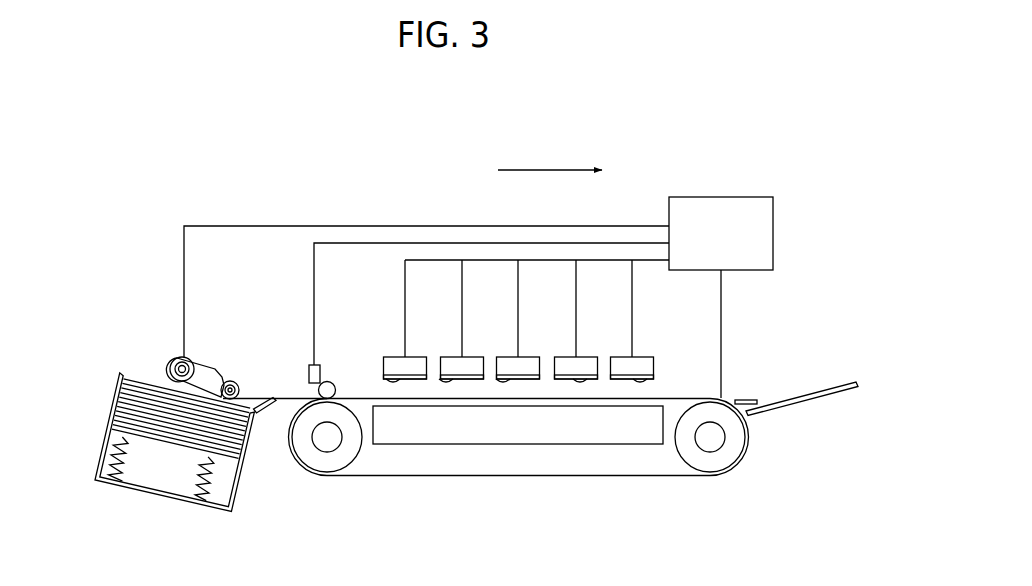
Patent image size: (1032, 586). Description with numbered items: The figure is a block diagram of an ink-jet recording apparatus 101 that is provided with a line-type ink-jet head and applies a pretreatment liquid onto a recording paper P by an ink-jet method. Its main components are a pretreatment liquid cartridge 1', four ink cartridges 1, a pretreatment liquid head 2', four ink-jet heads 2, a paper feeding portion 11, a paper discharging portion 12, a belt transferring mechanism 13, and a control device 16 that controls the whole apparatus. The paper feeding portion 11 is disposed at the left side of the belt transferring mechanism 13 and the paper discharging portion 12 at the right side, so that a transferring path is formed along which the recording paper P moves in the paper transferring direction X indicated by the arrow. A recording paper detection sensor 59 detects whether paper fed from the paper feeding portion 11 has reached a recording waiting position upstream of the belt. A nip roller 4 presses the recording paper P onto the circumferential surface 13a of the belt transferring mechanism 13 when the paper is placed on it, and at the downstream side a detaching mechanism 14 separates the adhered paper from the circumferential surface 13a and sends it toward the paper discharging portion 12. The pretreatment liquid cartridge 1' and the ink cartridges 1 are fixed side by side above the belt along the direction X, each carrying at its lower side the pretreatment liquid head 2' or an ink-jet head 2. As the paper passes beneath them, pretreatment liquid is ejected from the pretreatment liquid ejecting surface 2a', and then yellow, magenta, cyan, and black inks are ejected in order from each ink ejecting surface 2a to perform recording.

The ink-jet recording apparatus 101 is at (812, 147).
The paper transferring direction X is at (548, 168).
The control device 16 is at (735, 205).
The pretreatment liquid cartridge 1' is at (411, 319).
The ink cartridge 1 is at (550, 319).
The pretreatment liquid head 2' is at (405, 354).
The ink-jet head 2 is at (547, 354).
The pretreatment liquid ejecting surface 2a' is at (374, 390).
The ink ejecting surface 2a is at (545, 390).
The recording paper detection sensor 59 is at (316, 368).
The nip roller 4 is at (333, 387).
The paper feeding portion 11 is at (211, 337).
The recording paper P is at (160, 372).
The belt transferring mechanism 13 is at (298, 481).
The circumferential surface 13a is at (405, 478).
The detaching mechanism 14 is at (742, 398).
The paper discharging portion 12 is at (826, 363).